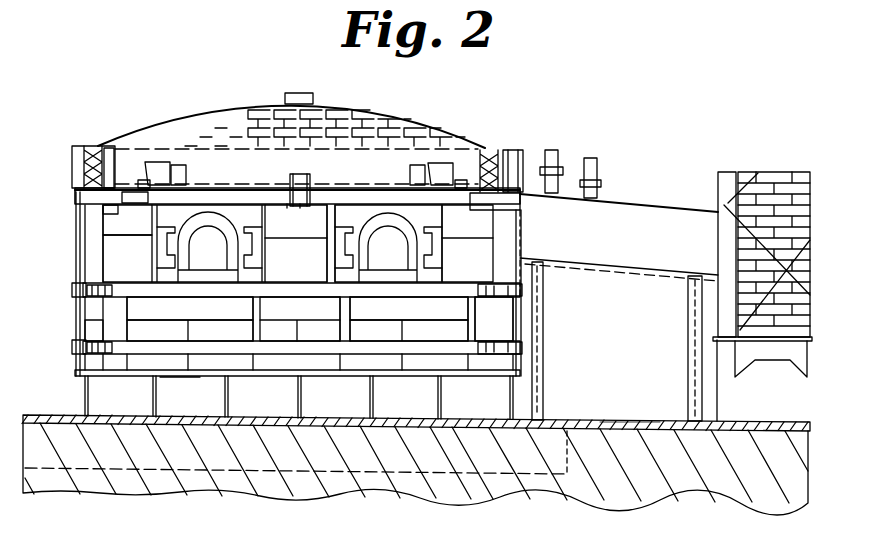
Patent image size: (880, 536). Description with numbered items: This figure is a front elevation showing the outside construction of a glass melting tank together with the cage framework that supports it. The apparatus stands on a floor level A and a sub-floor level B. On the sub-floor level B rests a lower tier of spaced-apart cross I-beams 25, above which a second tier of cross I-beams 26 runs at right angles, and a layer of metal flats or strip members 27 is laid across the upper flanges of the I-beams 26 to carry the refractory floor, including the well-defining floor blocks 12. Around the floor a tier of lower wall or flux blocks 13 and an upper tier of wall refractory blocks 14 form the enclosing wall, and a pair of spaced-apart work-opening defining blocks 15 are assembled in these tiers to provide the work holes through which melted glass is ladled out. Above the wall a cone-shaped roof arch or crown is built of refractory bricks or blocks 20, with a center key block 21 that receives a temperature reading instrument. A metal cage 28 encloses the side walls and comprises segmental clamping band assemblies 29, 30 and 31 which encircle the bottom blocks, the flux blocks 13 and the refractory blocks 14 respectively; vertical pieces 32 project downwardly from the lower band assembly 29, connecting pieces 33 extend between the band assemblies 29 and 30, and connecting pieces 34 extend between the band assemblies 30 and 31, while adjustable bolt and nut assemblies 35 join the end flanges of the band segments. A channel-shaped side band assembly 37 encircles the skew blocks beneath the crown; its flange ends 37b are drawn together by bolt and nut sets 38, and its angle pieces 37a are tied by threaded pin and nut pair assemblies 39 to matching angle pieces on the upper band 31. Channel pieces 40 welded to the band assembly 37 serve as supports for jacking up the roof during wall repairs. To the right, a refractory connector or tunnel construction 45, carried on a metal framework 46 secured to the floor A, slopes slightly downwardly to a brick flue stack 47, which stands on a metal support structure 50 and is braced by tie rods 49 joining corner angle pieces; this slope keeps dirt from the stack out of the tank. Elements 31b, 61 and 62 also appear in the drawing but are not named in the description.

The well-defining floor blocks 12 is at (297, 330).
The lower wall or flux blocks 13 is at (292, 277).
The upper tier of wall refractory blocks 14 is at (379, 243).
The work-opening defining blocks 15 is at (186, 256).
The refractory bricks or blocks of the roof arch 20 is at (350, 112).
The center key block 21 is at (302, 93).
The lower tier of cross I-beams 25 is at (286, 492).
The upper tier of cross I-beams 26 is at (88, 400).
The metal flats or strip members 27 is at (207, 376).
The metal cage 28 is at (75, 198).
The lower segmental clamping band assembly 29 is at (72, 352).
The intermediate segmental clamping band assembly 30 is at (72, 286).
The upper segmental clamping band assembly 31 is at (78, 206).
The corner block 31b is at (118, 243).
The vertical pieces 32 is at (132, 366).
The connecting pieces 33 is at (328, 310).
The connecting pieces 34 is at (75, 256).
The adjustable bolt and nut assemblies 35 is at (108, 292).
The channel-shaped side band assembly 37 is at (72, 148).
The angle pieces 37a is at (298, 176).
The flange ends 37b is at (96, 146).
The bolt and nut sets 38 is at (100, 148).
The threaded pin and nut pair assemblies 39 is at (143, 180).
The channel pieces 40 is at (176, 173).
The refractory connector or tunnel construction 45 is at (640, 213).
The metal framework 46 is at (622, 292).
The flue stack 47 is at (780, 182).
The tie rods 49 is at (726, 178).
The metal support structure 50 is at (790, 360).
The post 61 is at (552, 150).
The post 62 is at (594, 158).
The floor level A is at (628, 422).
The sub-floor level B is at (562, 422).